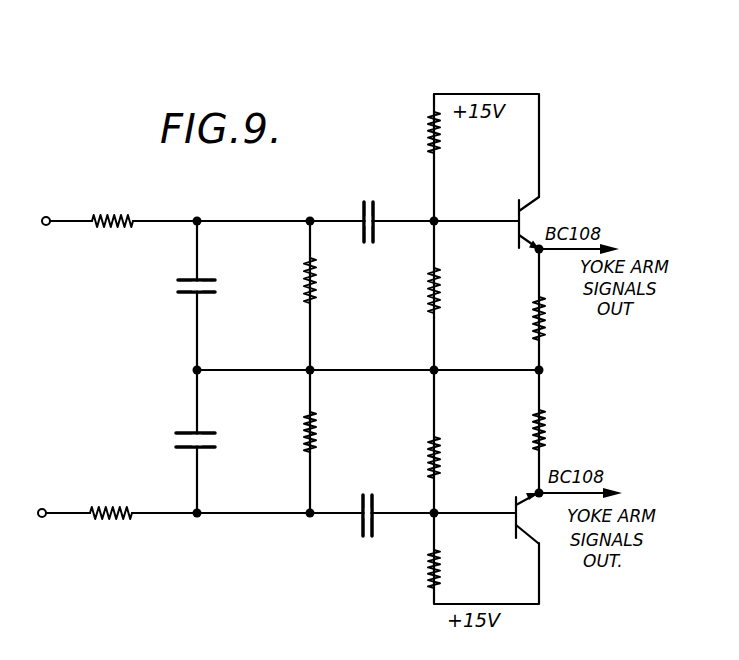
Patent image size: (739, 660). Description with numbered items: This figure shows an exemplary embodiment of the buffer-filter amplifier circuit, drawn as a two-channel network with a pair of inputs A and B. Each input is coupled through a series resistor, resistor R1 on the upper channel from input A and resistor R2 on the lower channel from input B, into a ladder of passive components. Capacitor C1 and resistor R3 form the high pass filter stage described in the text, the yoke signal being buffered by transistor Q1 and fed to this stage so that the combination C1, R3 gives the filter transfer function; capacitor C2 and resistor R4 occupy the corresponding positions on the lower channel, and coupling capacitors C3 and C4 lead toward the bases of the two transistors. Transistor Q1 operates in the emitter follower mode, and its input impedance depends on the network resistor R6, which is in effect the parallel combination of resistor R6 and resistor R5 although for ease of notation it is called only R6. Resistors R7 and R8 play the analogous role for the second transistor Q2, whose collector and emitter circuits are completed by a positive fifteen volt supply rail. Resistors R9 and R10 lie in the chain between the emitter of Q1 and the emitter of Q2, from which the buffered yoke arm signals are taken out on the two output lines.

The input terminal A is at (51, 207).
The input terminal B is at (46, 497).
The resistor R1 is at (112, 239).
The resistor R2 is at (111, 532).
The high pass filter resistor R3 is at (289, 280).
The resistor R4 is at (291, 438).
The resistor R5 is at (412, 135).
The network resistor R6 is at (415, 299).
The resistor R7 is at (415, 457).
The resistor R8 is at (415, 569).
The resistor R9 is at (517, 319).
The resistor R10 is at (516, 430).
The high pass filter capacitor C1 is at (178, 296).
The capacitor C2 is at (181, 460).
The capacitor C3 is at (368, 242).
The capacitor C4 is at (379, 503).
The transistor Q1 is at (510, 221).
The transistor Q2 (BC108) Q2 is at (507, 517).